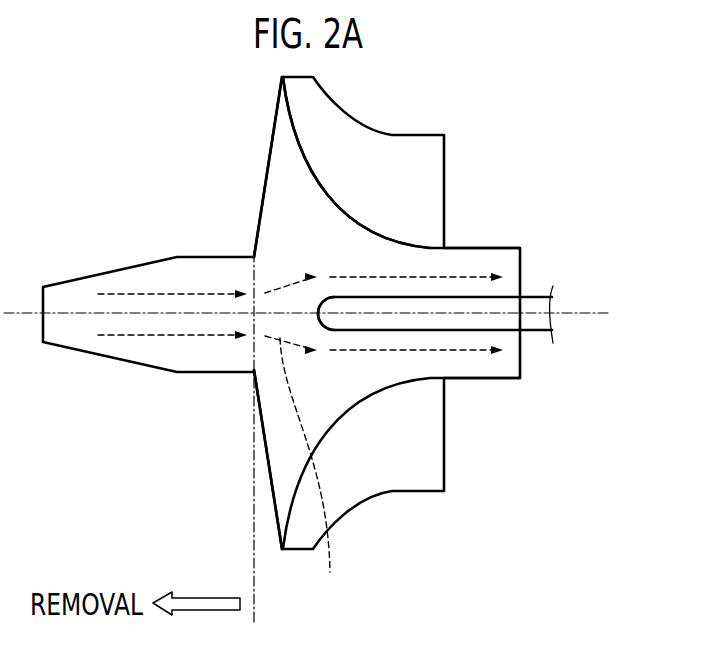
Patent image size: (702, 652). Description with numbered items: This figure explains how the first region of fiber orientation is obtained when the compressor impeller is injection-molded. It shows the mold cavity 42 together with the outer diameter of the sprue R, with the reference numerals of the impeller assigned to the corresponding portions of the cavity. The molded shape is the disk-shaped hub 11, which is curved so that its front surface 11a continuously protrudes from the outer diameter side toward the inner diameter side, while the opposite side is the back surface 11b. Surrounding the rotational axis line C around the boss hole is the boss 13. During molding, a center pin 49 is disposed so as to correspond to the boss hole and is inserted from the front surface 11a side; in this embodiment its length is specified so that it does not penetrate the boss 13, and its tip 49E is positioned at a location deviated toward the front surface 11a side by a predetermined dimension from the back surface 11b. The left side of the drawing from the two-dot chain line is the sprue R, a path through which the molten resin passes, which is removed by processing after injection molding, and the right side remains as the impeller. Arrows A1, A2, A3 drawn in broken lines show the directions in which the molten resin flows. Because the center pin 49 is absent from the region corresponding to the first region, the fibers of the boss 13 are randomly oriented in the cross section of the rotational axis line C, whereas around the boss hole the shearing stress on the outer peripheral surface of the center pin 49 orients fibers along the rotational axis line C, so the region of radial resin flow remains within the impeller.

The hub 11 is at (505, 248).
The front surface 11a is at (297, 157).
The back surface 11b is at (272, 162).
The boss 13 is at (520, 277).
The cavity 42 is at (331, 252).
The center pin 49 is at (533, 331).
The tip 49E is at (320, 327).
The sprue R is at (123, 262).
The arrow A1 is at (153, 337).
The arrow A2 is at (313, 473).
The arrow A3 is at (460, 352).
The rotational axis line C is at (582, 313).